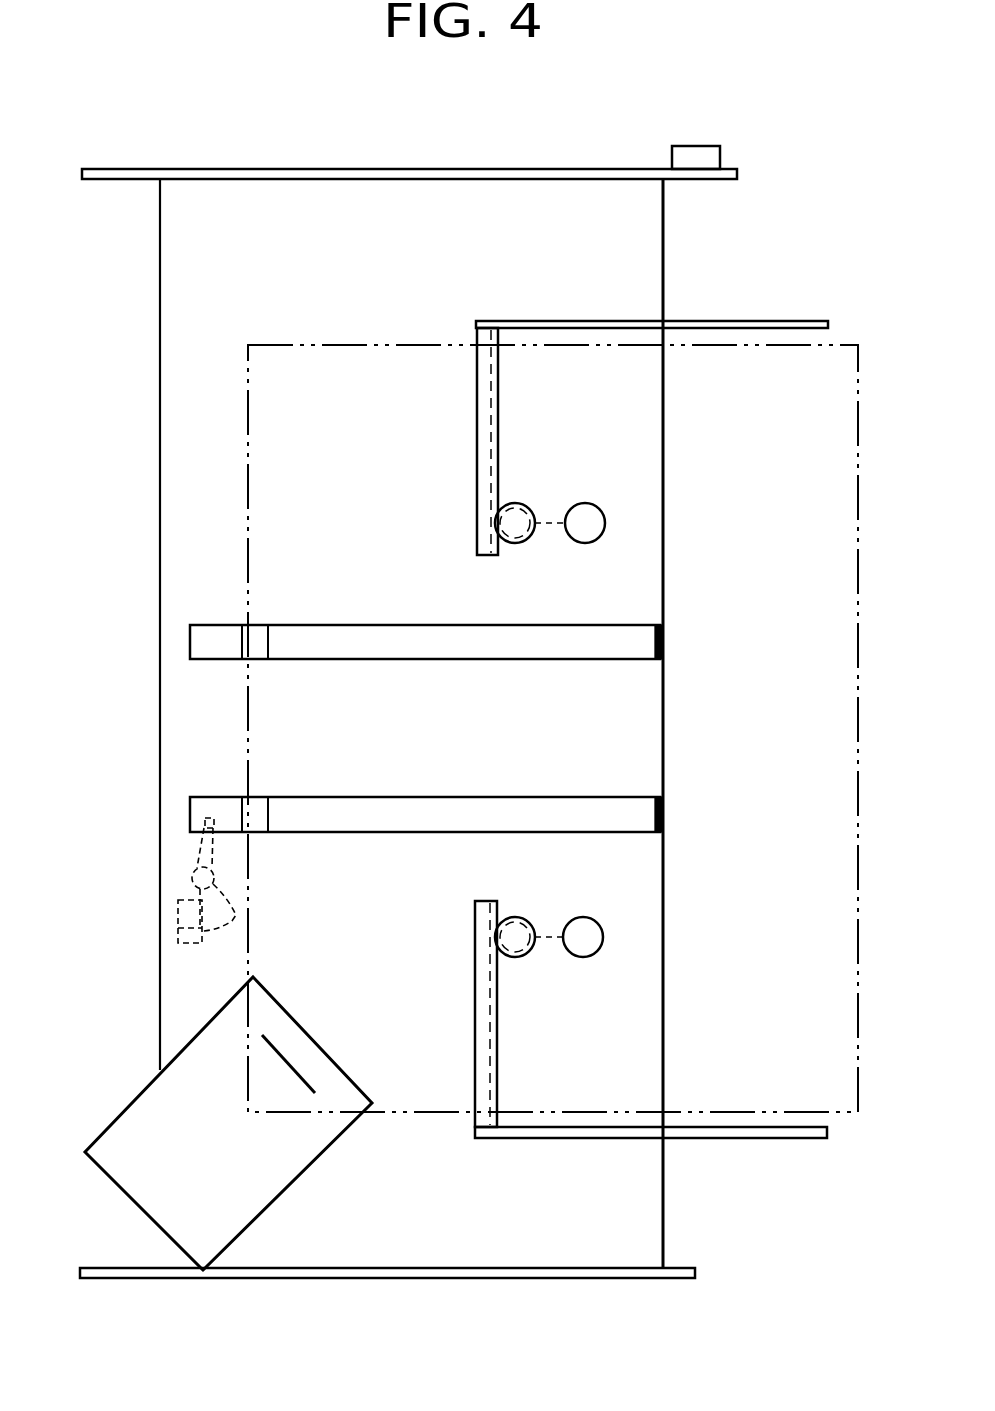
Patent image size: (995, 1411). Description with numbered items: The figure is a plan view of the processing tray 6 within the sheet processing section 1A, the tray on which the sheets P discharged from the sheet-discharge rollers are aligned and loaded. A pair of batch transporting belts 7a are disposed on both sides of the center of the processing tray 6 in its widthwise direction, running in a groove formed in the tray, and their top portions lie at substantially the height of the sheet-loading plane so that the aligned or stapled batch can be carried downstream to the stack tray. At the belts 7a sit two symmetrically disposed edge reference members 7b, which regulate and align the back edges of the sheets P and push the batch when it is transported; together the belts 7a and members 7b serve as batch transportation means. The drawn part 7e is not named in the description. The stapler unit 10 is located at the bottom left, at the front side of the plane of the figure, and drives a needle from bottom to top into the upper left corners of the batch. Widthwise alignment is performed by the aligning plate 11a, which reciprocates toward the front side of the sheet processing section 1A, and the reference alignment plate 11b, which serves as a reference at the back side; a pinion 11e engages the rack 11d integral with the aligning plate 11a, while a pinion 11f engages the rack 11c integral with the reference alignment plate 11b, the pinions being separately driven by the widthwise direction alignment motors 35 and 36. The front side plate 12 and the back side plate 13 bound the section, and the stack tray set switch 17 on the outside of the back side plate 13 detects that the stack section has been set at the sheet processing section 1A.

The sheet processing section 1A is at (276, 166).
The processing tray 6 is at (645, 243).
The batch transporting belt 7a is at (200, 640).
The edge reference member 7b is at (258, 635).
The roller drive mechanism 7e is at (182, 872).
The stapler unit 10 is at (240, 1222).
The aligning plate 11a is at (757, 1139).
The reference alignment plate 11b is at (763, 321).
The rack 11c is at (492, 458).
The rack 11d is at (492, 1031).
The pinion 11e is at (520, 916).
The pinion 11f is at (521, 545).
The front side plate 12 is at (506, 1278).
The back side plate 13 is at (527, 169).
The stack tray set switch 17 is at (700, 146).
The widthwise direction alignment motor 35 is at (586, 916).
The widthwise direction alignment motor 36 is at (589, 545).
The sheet P is at (256, 427).